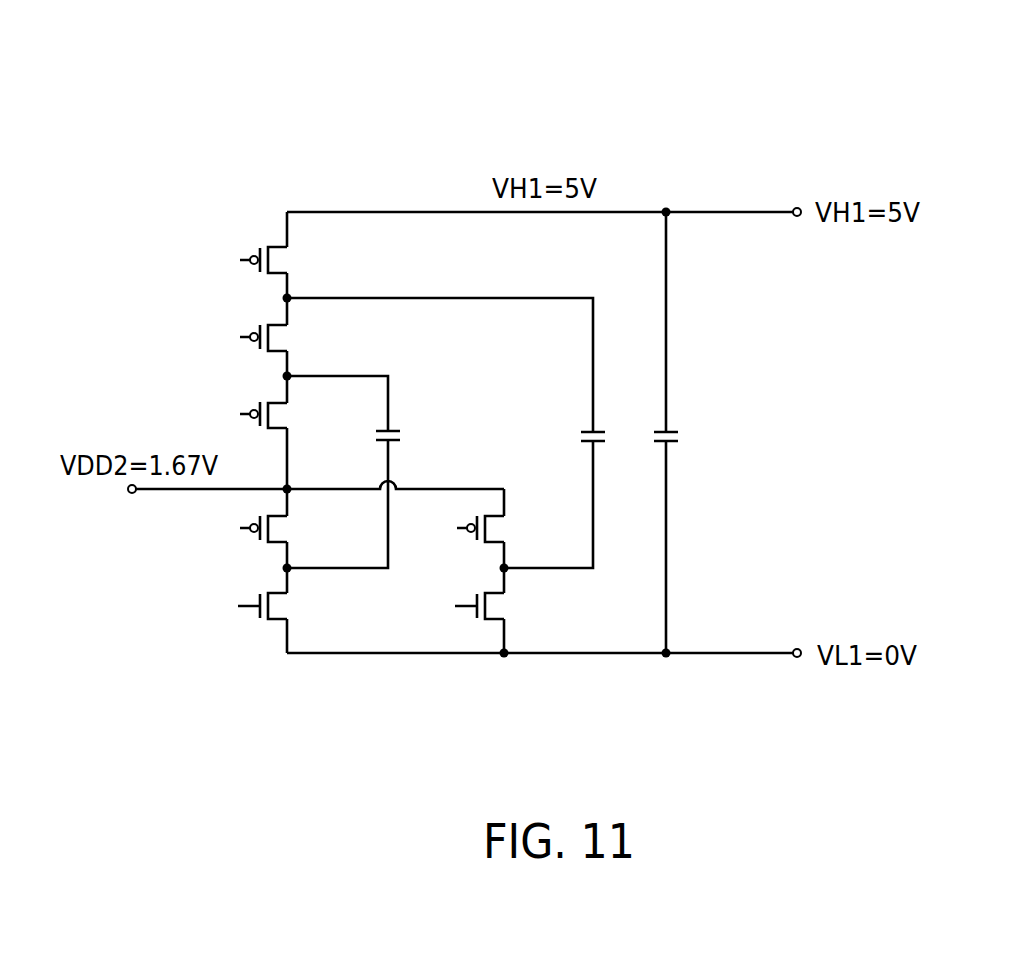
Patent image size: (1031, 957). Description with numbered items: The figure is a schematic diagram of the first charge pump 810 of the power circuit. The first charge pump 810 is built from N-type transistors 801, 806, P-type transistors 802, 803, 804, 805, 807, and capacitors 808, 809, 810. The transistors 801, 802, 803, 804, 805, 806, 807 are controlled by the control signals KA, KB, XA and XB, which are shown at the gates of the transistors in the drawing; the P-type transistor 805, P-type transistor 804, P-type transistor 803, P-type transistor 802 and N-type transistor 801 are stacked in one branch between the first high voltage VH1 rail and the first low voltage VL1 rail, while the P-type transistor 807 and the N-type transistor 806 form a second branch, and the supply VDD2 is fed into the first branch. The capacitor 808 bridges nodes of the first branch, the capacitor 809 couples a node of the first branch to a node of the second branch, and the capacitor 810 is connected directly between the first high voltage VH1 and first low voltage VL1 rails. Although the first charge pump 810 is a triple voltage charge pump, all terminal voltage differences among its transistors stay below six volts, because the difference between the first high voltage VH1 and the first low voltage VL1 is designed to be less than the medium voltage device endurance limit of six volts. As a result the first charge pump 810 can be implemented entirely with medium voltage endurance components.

The N-type transistor 801 is at (285, 596).
The P-type transistor 802 is at (285, 518).
The P-type transistor 803 is at (285, 404).
The P-type transistor 804 is at (285, 327).
The P-type transistor 805 is at (285, 250).
The N-type transistor 806 is at (502, 596).
The P-type transistor 807 is at (502, 518).
The capacitor 808 is at (395, 444).
The capacitor 809 is at (589, 428).
The first charge pump 810 is at (669, 428).